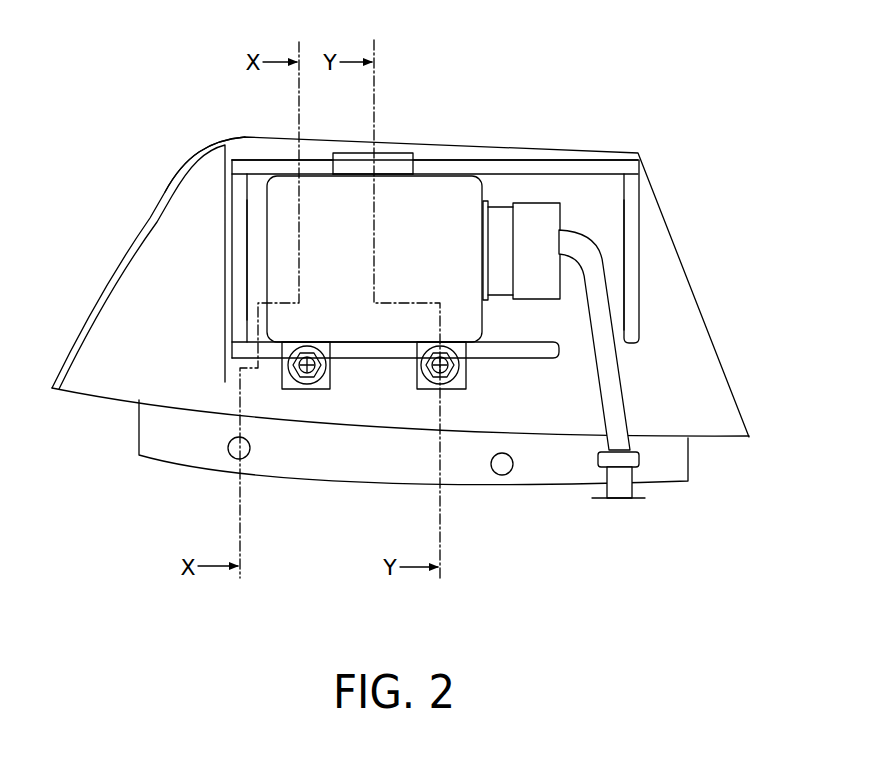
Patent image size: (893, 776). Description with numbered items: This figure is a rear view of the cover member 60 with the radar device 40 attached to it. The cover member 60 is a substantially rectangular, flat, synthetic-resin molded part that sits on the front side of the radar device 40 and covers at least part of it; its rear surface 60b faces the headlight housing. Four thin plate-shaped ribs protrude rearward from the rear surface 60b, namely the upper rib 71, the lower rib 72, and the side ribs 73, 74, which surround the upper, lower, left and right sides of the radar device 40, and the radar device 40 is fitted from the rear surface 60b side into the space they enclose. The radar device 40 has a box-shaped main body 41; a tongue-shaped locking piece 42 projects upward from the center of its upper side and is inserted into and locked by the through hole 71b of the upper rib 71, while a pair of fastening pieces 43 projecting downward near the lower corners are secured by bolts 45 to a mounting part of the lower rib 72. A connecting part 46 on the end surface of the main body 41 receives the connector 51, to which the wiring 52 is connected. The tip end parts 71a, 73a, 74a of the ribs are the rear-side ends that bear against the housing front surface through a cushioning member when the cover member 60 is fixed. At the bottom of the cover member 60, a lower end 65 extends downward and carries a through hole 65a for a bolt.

The radar device 40 is at (452, 172).
The main body 41 is at (312, 187).
The locking piece 42 is at (383, 152).
The fastening piece 43 is at (333, 352).
The bolt 45 is at (320, 385).
The connecting part 46 is at (508, 207).
The connector 51 is at (543, 208).
The wiring 52 is at (613, 377).
The cover member 60 is at (652, 185).
The rear surface 60b is at (238, 150).
The lower end 65 is at (563, 475).
The through hole 65a is at (229, 447).
The upper rib 71 is at (434, 157).
The tip end part 71a is at (293, 165).
The through hole 71b is at (395, 167).
The lower rib 72 is at (373, 360).
The rib 73 is at (230, 204).
The tip end part 73a is at (240, 253).
The rib 74 is at (643, 248).
The tip end part 74a is at (633, 287).